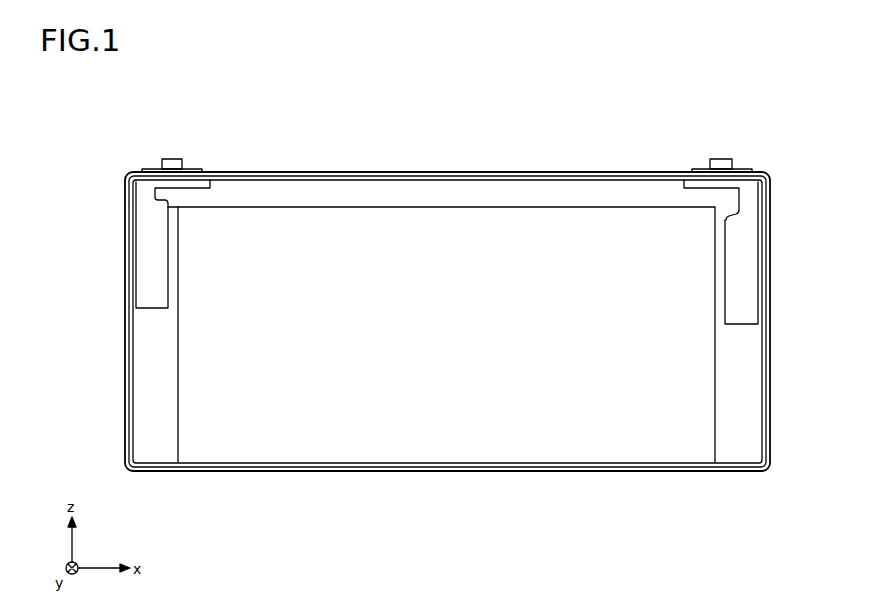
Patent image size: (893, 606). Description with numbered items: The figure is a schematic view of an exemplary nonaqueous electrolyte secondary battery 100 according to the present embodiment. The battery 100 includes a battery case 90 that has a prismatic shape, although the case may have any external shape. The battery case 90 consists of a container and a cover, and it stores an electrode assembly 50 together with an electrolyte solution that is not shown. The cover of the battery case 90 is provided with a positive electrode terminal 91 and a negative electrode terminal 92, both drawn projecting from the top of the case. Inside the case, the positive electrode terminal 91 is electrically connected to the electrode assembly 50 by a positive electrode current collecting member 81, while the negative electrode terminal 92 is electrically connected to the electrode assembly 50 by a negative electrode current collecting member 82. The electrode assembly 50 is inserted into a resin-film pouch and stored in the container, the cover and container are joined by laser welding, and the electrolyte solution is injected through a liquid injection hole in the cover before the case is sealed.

The battery 100 is at (780, 112).
The battery case 90 is at (420, 171).
The positive electrode terminal 91 is at (170, 158).
The negative electrode terminal 92 is at (721, 158).
The positive electrode current collecting member 81 is at (150, 264).
The negative electrode current collecting member 82 is at (745, 247).
The electrode assembly 50 is at (425, 412).